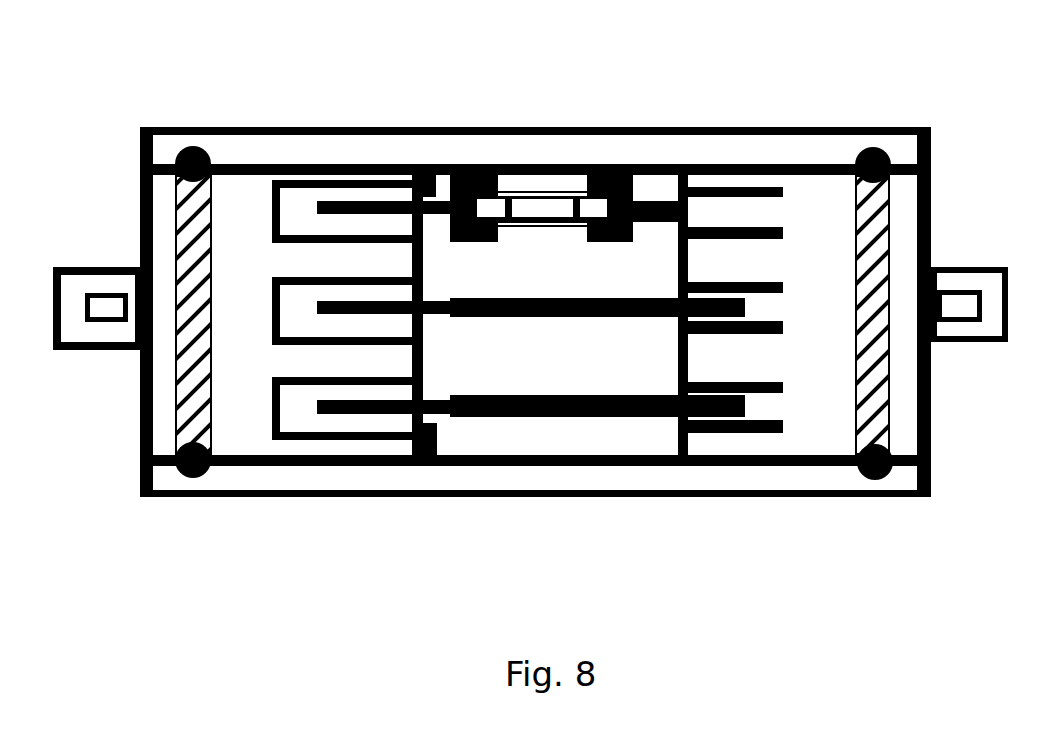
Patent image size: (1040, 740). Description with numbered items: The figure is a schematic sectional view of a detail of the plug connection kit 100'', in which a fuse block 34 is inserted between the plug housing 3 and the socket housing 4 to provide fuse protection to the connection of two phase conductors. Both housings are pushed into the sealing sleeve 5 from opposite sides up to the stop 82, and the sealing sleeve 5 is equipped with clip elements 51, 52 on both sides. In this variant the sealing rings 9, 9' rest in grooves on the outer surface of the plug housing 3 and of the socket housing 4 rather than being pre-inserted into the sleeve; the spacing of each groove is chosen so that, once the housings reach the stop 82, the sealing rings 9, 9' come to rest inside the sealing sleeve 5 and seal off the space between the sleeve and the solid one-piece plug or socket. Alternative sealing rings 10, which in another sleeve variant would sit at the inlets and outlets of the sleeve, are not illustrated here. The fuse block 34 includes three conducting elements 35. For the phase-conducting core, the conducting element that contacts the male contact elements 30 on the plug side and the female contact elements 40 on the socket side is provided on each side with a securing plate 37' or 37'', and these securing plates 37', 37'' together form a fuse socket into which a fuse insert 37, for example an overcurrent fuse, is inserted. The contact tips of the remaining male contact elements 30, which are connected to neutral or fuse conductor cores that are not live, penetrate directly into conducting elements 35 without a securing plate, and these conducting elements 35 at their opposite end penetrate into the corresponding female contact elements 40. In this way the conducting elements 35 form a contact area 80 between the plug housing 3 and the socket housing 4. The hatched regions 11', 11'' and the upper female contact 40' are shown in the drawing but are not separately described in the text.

The plug housing 3 is at (248, 430).
The socket housing 4 is at (808, 417).
The sealing sleeve 5 is at (620, 130).
The sealing ring 9 is at (164, 356).
The sealing ring 9' is at (914, 349).
The sealing rings 10 is at (430, 457).
The first hatched wall 11' is at (258, 255).
The second hatched wall 11'' is at (846, 250).
The male contact elements 30 is at (330, 427).
The fuse block 34 is at (518, 440).
The conducting elements 35 is at (548, 298).
The fuse insert 37 is at (542, 150).
The securing plate 37' is at (468, 134).
The securing plate 37'' is at (655, 135).
The female contact elements 40 is at (715, 413).
The second comb electrode upper fingers 40' is at (747, 257).
The clip element 51 is at (97, 350).
The clip element 52 is at (972, 342).
The contact area 80 is at (562, 427).
The stop 82 is at (440, 178).
The plug connection kit 100'' is at (535, 394).